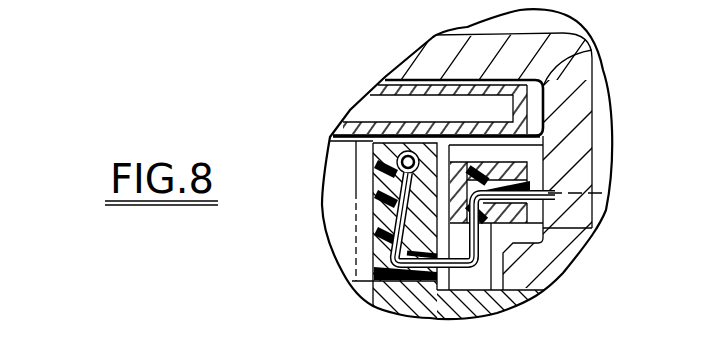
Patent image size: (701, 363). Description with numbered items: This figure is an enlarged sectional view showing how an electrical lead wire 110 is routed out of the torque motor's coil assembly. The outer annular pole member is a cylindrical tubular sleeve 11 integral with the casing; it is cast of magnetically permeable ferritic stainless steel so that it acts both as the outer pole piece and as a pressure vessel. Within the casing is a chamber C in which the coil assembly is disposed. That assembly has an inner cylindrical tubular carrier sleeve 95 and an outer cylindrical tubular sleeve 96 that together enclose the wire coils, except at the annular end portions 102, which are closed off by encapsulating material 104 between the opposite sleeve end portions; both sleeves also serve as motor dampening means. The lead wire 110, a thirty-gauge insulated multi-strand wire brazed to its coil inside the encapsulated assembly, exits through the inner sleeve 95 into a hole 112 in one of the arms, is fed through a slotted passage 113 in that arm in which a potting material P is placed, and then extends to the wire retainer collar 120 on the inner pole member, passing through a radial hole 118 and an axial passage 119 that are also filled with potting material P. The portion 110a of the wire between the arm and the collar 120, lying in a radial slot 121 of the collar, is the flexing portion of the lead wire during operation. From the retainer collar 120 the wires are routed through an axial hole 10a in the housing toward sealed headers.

The cylindrical tubular sleeve 11 is at (425, 57).
The outer cylindrical tubular sleeve 96 is at (387, 75).
The inner cylindrical tubular carrier sleeve 95 is at (350, 112).
The radial hole 118 is at (482, 150).
The annular end portions 102 is at (592, 53).
The encapsulating material 104 is at (592, 91).
The chamber C is at (532, 150).
The potting material P is at (530, 178).
The axial passage 119 is at (522, 183).
The axial hole 10a is at (607, 193).
The wire retainer collar 120 is at (592, 228).
The radial slot 121 is at (487, 263).
The flexing portion of the lead wire 110a is at (476, 240).
The hole 112 is at (358, 164).
The slotted passage 113 is at (358, 216).
The lead wire 110 is at (358, 246).